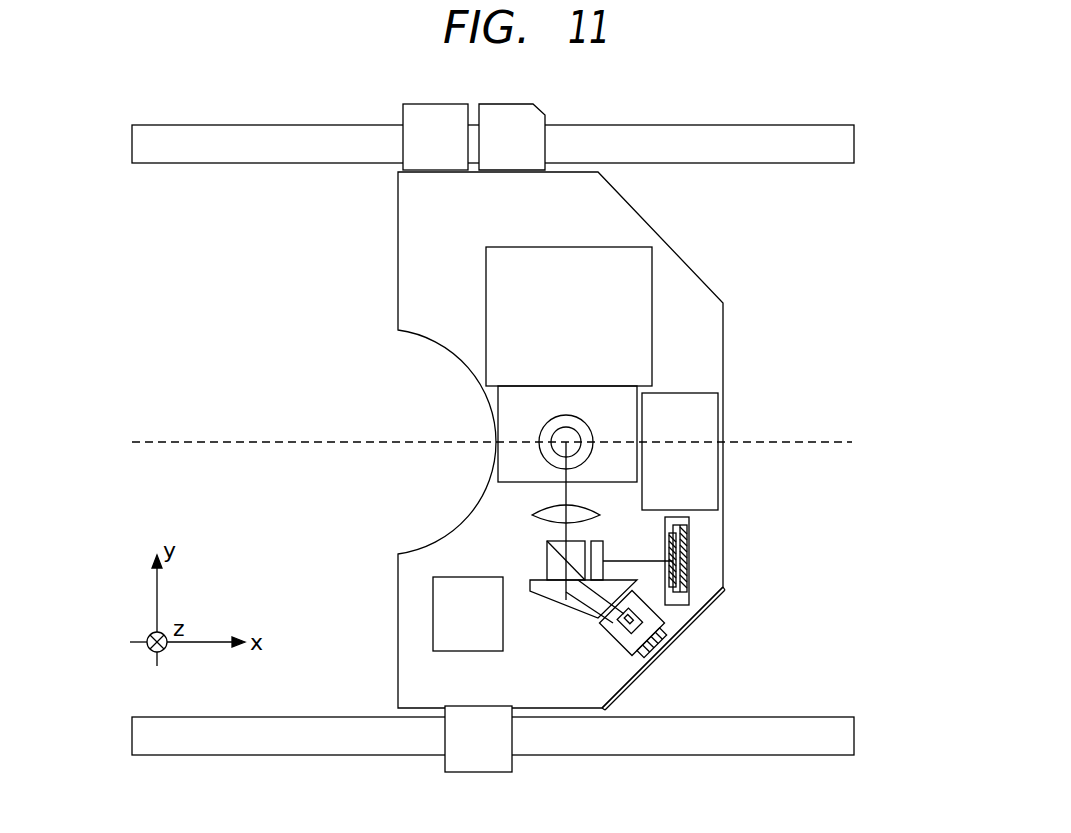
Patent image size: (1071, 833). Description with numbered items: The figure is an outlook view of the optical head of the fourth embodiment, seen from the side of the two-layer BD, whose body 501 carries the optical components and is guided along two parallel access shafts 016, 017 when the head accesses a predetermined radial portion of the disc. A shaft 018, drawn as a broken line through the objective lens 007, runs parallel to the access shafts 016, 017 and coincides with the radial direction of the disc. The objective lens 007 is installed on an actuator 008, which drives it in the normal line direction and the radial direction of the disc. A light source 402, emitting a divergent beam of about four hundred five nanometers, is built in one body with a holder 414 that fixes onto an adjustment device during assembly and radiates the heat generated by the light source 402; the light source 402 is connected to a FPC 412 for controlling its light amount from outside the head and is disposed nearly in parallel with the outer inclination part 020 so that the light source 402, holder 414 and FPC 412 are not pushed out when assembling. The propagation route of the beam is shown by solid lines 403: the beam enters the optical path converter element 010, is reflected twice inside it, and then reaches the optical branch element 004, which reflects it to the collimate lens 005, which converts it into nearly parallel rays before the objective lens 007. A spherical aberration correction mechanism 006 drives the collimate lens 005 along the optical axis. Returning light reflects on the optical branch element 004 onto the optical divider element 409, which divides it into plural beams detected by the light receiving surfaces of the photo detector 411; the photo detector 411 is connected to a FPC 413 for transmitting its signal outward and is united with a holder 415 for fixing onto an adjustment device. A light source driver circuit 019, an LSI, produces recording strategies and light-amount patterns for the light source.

The access shaft 016 is at (854, 146).
The access shaft 017 is at (854, 728).
The shaft 018 is at (824, 440).
The optical pickup base 501 is at (723, 331).
The actuator 008 is at (490, 295).
The objective lens 007 is at (548, 424).
The spherical aberration correction mechanism 006 is at (713, 468).
The light source driver circuit 019 is at (433, 612).
The collimate lens 005 is at (545, 505).
The optical branch element 004 is at (547, 555).
The optical divider element 409 is at (597, 540).
The optical path converter element 010 is at (532, 584).
The solid lines 403 is at (598, 597).
The holder 414 is at (605, 635).
The light source 402 is at (622, 640).
The FPC 412 is at (660, 655).
The photo detector 411 is at (690, 568).
The FPC 413 is at (685, 536).
The holder 415 is at (688, 601).
The outer inclination part 020 is at (725, 597).